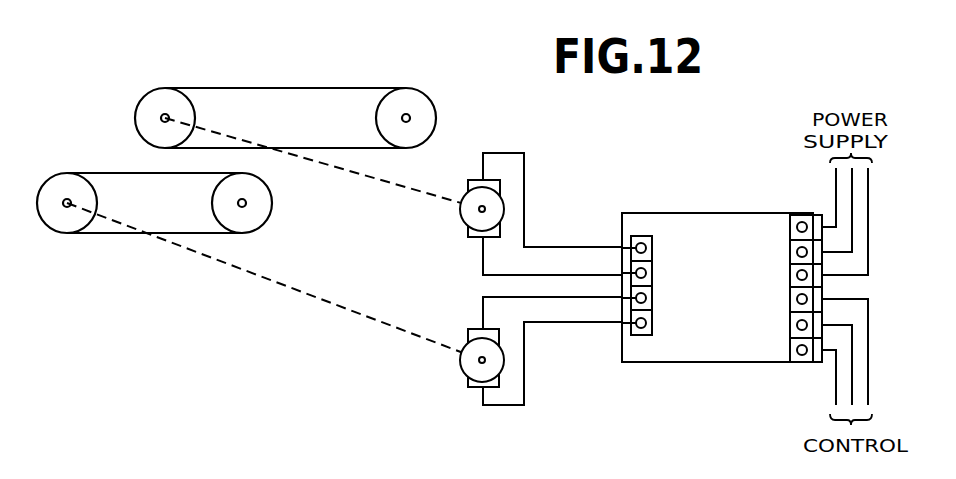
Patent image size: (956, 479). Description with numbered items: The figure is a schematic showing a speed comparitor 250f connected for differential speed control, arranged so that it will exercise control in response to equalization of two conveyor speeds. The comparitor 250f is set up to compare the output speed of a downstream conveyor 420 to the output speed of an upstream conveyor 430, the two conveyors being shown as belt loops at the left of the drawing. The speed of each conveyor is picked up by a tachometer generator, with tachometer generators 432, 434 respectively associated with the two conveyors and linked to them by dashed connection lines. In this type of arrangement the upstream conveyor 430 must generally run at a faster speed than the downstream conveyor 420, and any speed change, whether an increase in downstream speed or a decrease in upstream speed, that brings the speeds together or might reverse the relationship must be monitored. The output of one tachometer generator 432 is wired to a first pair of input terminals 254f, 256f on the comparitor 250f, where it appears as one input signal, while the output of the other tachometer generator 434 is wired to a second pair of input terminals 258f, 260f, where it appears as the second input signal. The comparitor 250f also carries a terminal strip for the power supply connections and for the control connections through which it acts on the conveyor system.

The downstream conveyor 420 is at (359, 54).
The upstream conveyor 430 is at (117, 240).
The tachometer generator 432 is at (503, 200).
The tachometer generator 434 is at (463, 376).
The speed comparitor 250f is at (711, 208).
The terminal 254f is at (653, 248).
The terminal 256f is at (653, 273).
The terminal 258f is at (653, 297).
The terminal 260f is at (653, 323).